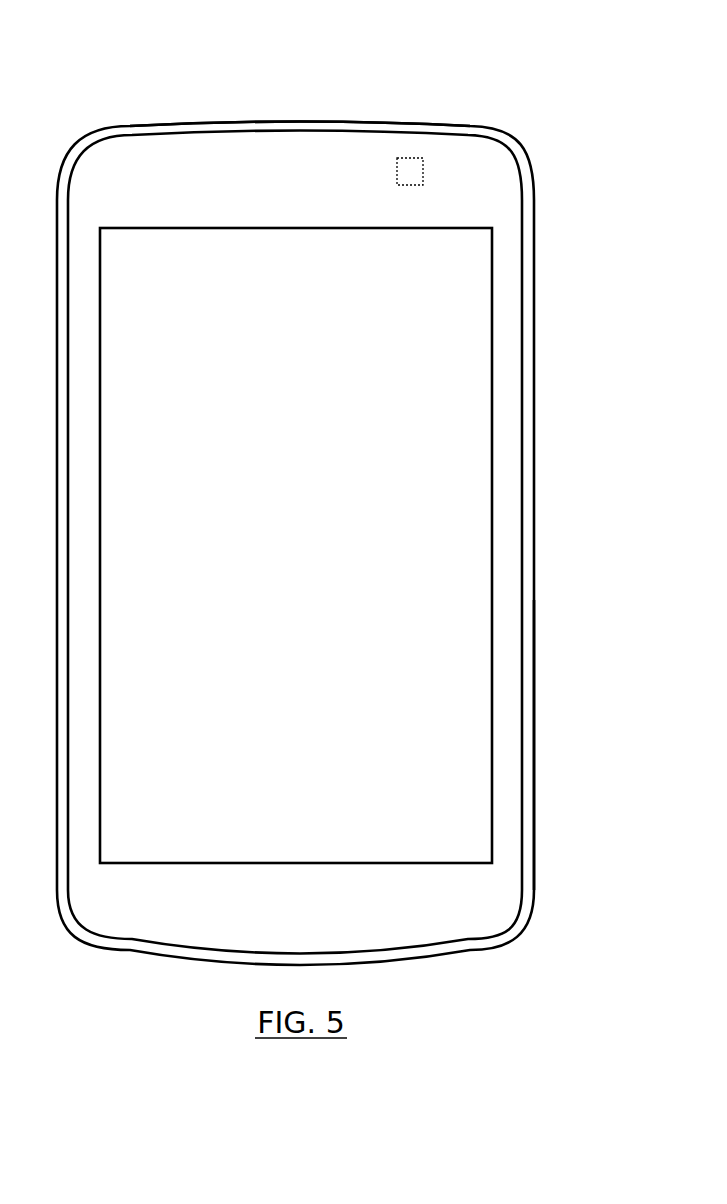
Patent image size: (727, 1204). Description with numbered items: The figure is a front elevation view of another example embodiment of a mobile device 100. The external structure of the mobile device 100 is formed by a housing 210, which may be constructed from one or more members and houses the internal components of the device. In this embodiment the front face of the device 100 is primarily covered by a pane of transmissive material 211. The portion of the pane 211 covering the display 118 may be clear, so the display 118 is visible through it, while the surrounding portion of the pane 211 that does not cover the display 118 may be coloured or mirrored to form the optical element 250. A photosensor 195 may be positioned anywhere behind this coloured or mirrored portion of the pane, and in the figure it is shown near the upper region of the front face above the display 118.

The mobile device 100 is at (450, 36).
The display screen 118 is at (407, 505).
The photosensor 195 is at (423, 178).
The housing 210 is at (537, 587).
The pane of transmissive material 211 is at (527, 690).
The optical element 250 is at (238, 157).